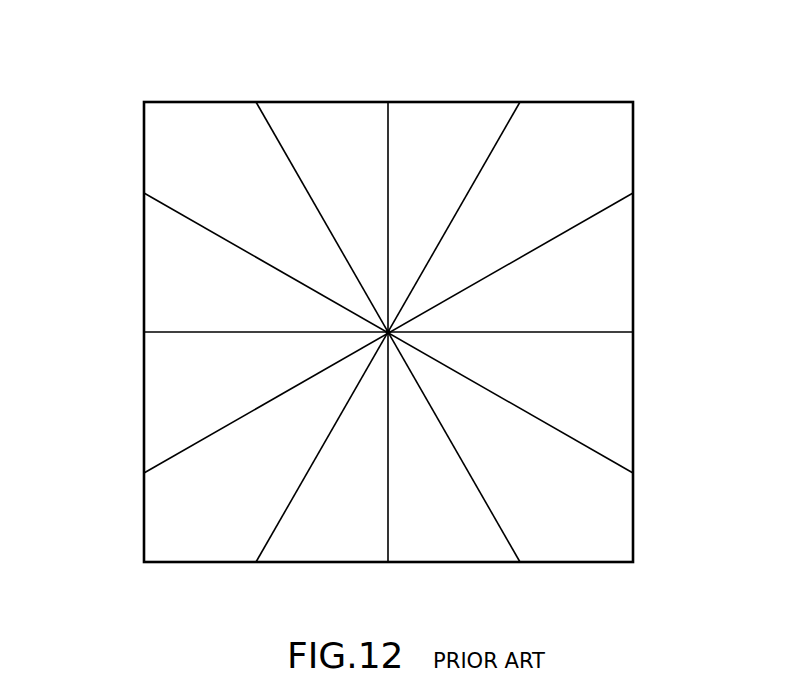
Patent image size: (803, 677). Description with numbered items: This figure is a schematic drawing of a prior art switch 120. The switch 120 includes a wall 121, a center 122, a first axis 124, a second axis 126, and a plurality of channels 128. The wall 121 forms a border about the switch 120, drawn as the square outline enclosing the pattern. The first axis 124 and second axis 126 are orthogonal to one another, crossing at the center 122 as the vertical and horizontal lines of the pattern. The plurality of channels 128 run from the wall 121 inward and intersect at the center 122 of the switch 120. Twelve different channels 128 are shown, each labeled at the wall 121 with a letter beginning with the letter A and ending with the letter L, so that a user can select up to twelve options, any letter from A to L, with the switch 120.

The switch 120 is at (565, 68).
The wall 121 is at (198, 102).
The center 122 is at (388, 332).
The first axis 124 is at (388, 142).
The second axis 126 is at (560, 331).
The channels 128 is at (210, 232).